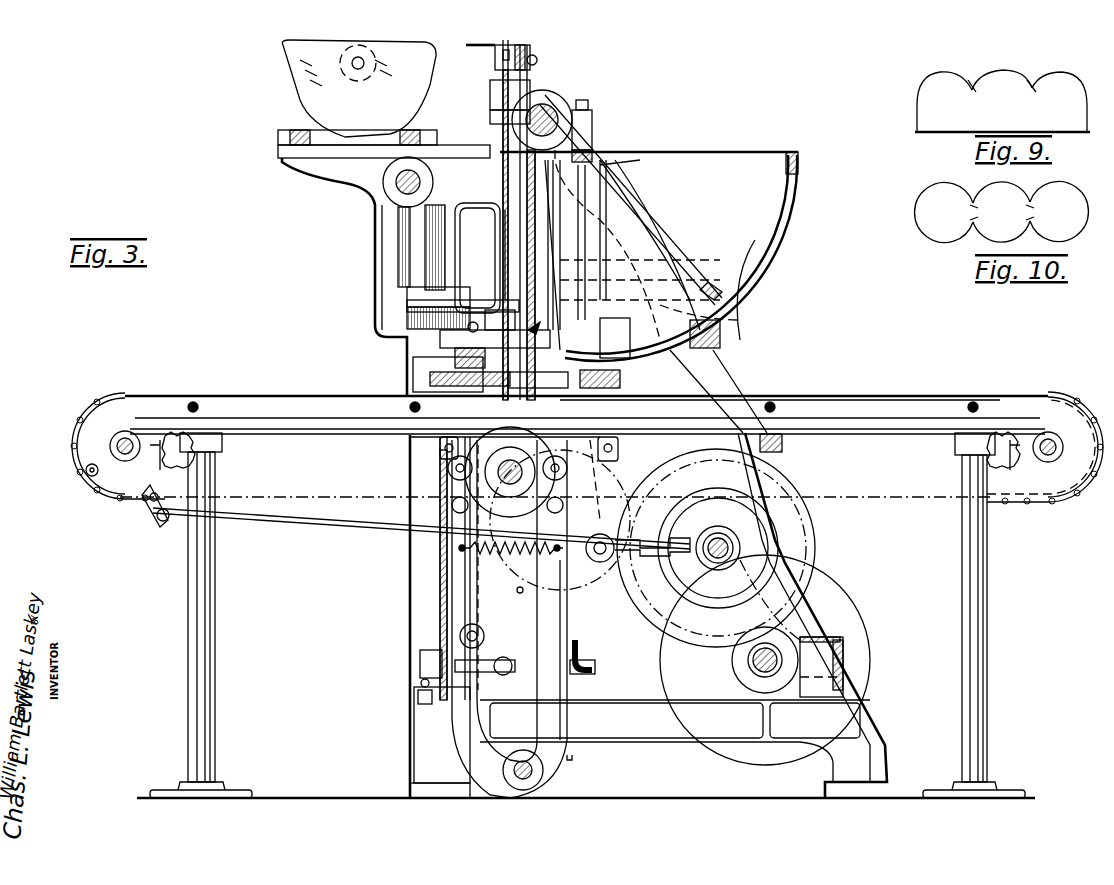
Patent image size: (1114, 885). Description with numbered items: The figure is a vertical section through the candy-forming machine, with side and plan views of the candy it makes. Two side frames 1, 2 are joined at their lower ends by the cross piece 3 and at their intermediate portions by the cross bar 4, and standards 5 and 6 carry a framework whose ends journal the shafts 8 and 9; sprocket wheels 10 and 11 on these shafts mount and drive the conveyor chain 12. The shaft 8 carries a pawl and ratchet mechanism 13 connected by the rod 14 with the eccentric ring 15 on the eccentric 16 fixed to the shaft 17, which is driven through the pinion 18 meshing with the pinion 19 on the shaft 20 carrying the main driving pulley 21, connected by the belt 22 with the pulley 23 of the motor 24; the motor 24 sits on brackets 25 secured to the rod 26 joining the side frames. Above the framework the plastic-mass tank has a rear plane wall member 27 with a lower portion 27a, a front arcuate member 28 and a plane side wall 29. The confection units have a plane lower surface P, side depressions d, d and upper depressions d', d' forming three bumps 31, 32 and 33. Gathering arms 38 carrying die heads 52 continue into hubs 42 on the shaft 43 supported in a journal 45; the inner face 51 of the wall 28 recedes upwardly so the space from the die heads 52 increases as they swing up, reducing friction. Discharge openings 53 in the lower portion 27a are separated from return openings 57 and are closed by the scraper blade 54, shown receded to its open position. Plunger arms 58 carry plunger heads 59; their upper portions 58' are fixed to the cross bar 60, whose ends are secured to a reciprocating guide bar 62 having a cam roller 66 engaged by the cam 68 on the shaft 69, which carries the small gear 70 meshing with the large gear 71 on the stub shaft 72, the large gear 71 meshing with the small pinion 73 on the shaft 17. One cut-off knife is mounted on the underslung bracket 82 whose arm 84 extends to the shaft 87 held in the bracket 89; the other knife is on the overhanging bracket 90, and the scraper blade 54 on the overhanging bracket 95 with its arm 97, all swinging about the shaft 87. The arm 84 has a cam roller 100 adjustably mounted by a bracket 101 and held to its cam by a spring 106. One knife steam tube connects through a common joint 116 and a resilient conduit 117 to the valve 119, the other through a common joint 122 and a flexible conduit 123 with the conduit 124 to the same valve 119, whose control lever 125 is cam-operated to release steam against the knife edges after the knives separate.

In FIG. 3, the side frame 1 is at (900, 430).
In FIG. 3, the side frame 2 is at (648, 615).
In FIG. 3, the cross piece 3 is at (840, 650).
In FIG. 3, the cross bar 4 is at (780, 440).
In FIG. 3, the standard 5 is at (188, 585).
In FIG. 3, the standard 6 is at (970, 615).
In FIG. 3, the shaft 8 is at (110, 450).
In FIG. 3, the shaft 9 is at (1047, 455).
In FIG. 3, the sprocket wheel 10 is at (180, 464).
In FIG. 3, the sprocket wheel 11 is at (995, 458).
In FIG. 3, the conveyor chain 12 is at (1080, 490).
In FIG. 3, the pawl and ratchet mechanism 13 is at (92, 470).
In FIG. 3, the rod 14 is at (280, 522).
In FIG. 3, the eccentric ring 15 is at (760, 515).
In FIG. 3, the eccentric 16 is at (762, 540).
In FIG. 3, the shaft 17 is at (770, 530).
In FIG. 3, the pinion 18 is at (820, 532).
In FIG. 3, the pinion 19 is at (771, 600).
In FIG. 3, the shaft 20 is at (752, 660).
In FIG. 3, the main driving pulley 21 is at (860, 615).
In FIG. 3, the belt 22 is at (410, 130).
In FIG. 3, the pulley 23 is at (300, 90).
In FIG. 3, the motor 24 is at (350, 64).
In FIG. 3, the brackets 25 is at (385, 180).
In FIG. 3, the rod 26 is at (396, 186).
In FIG. 3, the rear plane wall member 27 is at (500, 238).
In FIG. 3, the lower portion of wall 27a is at (505, 278).
In FIG. 3, the front arcuate member 28 is at (780, 246).
In FIG. 3, the plane side wall 29 is at (649, 291).
In FIG. 9, the bump 31 is at (944, 102).
In FIG. 10, the bump 31 is at (944, 213).
In FIG. 9, the bump 32 is at (1002, 86).
In FIG. 10, the bump 32 is at (1001, 212).
In FIG. 9, the bump 33 is at (1059, 102).
In FIG. 10, the bump 33 is at (1059, 212).
In FIG. 3, the gathering arms 38 is at (563, 222).
In FIG. 3, the hubs 42 is at (542, 100).
In FIG. 3, the shaft 43 is at (550, 115).
In FIG. 3, the journal 45 is at (578, 130).
In FIG. 3, the inner face 51 is at (755, 240).
In FIG. 3, the die heads 52 is at (760, 270).
In FIG. 3, the discharge openings 53 is at (420, 388).
In FIG. 3, the scraper blade 54 is at (505, 296).
In FIG. 3, the return openings 57 is at (580, 380).
In FIG. 3, the plunger arms 58 is at (555, 220).
In FIG. 3, the upper portions of plunger arms 58' is at (534, 61).
In FIG. 3, the plunger head 59 is at (545, 320).
In FIG. 3, the cross bar 60 is at (505, 55).
In FIG. 3, the guide bar 62 is at (505, 90).
In FIG. 3, the cam roller 66 is at (615, 478).
In FIG. 3, the cam 68 is at (500, 500).
In FIG. 3, the shaft 69 is at (511, 559).
In FIG. 3, the small gear 70 is at (500, 553).
In FIG. 3, the large gear 71 is at (512, 552).
In FIG. 3, the stub shaft 72 is at (600, 640).
In FIG. 3, the small pinion 73 is at (682, 498).
In FIG. 3, the underslung bracket 82 is at (600, 400).
In FIG. 3, the arm 84 is at (510, 619).
In FIG. 3, the shaft 87 is at (545, 775).
In FIG. 3, the bracket 89 is at (567, 758).
In FIG. 3, the overhanging bracket 90 is at (415, 378).
In FIG. 3, the overhanging bracket 95 is at (495, 352).
In FIG. 3, the arm 97 is at (460, 470).
In FIG. 3, the cam rollers 100 is at (590, 490).
In FIG. 3, the brackets 101 is at (610, 490).
In FIG. 3, the springs 106 is at (499, 592).
In FIG. 3, the common joint 116 is at (510, 668).
In FIG. 3, the resilient conduit 117 is at (600, 665).
In FIG. 3, the valve 119 is at (483, 640).
In FIG. 3, the common joint 122 is at (440, 445).
In FIG. 3, the flexible conduit 123 is at (399, 568).
In FIG. 3, the conduit 124 is at (420, 695).
In FIG. 3, the control lever 125 is at (482, 625).
In FIG. 9, the plane lower surface P is at (945, 133).
In FIG. 10, the depressions d is at (1001, 211).
In FIG. 9, the depressions d' is at (1002, 66).